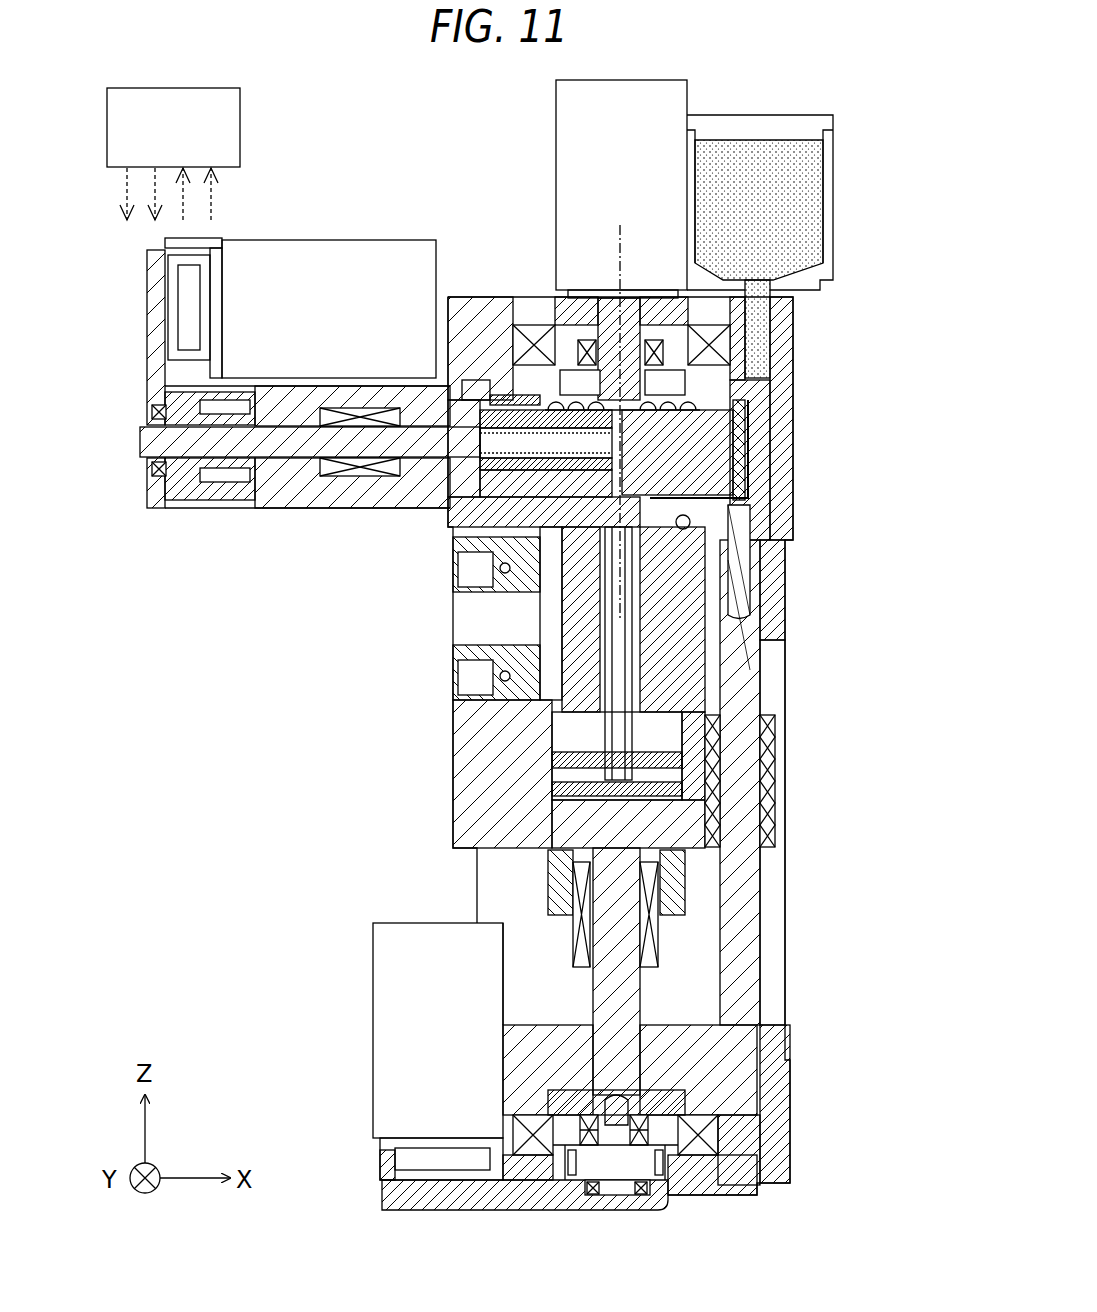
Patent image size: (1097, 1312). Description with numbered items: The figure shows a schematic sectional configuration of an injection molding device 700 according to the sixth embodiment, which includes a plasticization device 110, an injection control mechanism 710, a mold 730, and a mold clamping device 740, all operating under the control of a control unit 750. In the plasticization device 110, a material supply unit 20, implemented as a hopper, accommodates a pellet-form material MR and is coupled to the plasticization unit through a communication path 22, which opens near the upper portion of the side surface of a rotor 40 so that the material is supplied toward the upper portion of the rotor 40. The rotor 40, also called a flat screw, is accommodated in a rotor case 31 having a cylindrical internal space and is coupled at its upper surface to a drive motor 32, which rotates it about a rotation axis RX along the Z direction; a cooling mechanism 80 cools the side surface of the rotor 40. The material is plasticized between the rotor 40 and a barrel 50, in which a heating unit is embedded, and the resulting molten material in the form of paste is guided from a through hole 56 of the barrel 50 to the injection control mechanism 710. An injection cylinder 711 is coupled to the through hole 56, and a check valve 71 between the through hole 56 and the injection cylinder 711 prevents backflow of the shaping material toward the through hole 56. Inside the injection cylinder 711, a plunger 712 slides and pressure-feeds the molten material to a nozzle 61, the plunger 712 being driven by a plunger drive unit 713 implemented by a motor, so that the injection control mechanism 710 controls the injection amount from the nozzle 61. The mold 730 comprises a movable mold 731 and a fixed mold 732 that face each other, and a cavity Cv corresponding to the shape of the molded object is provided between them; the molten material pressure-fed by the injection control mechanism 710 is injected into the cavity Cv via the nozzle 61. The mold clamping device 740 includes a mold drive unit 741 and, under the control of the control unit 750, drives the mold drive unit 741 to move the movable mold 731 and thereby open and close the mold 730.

The control unit 750 is at (240, 125).
The plunger drive unit 713 is at (327, 252).
The plunger 712 is at (297, 447).
The injection cylinder 711 is at (465, 470).
The injection control mechanism 710 is at (390, 412).
The plasticization device 110 is at (672, 637).
The drive motor 32 is at (556, 135).
The rotation axis RX is at (620, 262).
The material MR is at (795, 190).
The material supply unit 20 is at (792, 202).
The communication path 22 is at (765, 332).
The rotor case 31 is at (790, 378).
The rotor 40 is at (531, 300).
The cooling mechanism 80 is at (472, 305).
The barrel 50 is at (705, 450).
The check valve 71 is at (745, 432).
The through hole 56 is at (752, 505).
The nozzle 61 is at (700, 567).
The cavity Cv is at (628, 625).
The injection molding device 700 is at (526, 868).
The mold 730 is at (506, 619).
The fixed mold 732 is at (522, 589).
The movable mold 731 is at (518, 628).
The mold clamping device 740 is at (389, 1022).
The mold drive unit 741 is at (373, 1025).